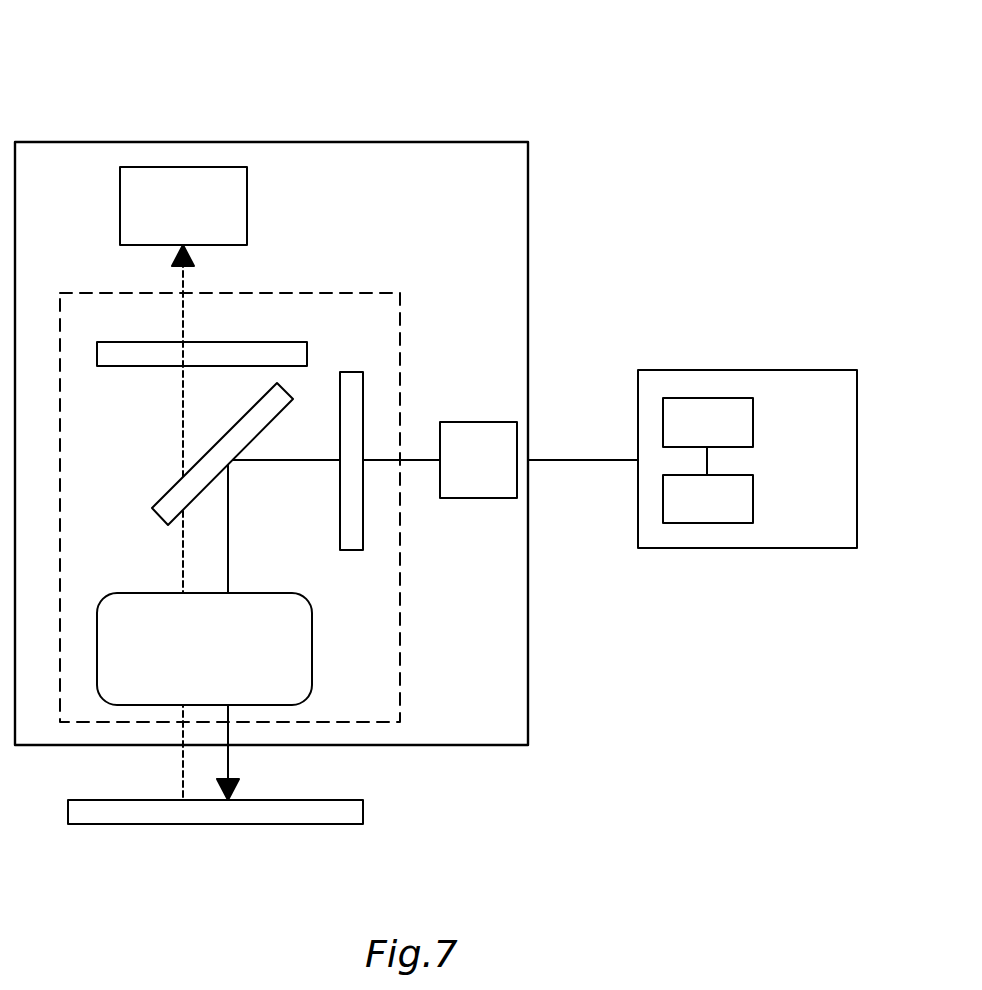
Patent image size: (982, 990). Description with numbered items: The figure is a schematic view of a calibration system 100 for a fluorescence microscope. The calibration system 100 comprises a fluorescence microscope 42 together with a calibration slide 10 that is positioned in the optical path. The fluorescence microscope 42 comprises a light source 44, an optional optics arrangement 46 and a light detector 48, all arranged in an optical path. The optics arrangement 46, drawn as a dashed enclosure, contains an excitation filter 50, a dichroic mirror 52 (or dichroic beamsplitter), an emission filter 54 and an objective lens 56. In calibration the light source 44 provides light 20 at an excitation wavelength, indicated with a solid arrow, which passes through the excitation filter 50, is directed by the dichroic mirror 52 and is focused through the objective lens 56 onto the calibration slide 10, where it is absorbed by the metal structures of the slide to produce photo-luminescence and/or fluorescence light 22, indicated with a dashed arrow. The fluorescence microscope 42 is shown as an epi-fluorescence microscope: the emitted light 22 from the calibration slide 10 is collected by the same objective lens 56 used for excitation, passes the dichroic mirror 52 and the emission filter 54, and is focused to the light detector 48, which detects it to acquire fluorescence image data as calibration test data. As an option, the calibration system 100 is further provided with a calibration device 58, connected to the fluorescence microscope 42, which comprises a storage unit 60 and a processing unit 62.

The calibration system 100 is at (714, 122).
The fluorescence microscope 42 is at (528, 217).
The light detector 48 is at (247, 210).
The optics arrangement 46 is at (400, 337).
The photo-luminescence and/or fluorescence light 22 is at (183, 555).
The light 20 is at (410, 458).
The emission filter 54 is at (118, 366).
The dichroic mirror 52 is at (182, 477).
The excitation filter 50 is at (340, 488).
The light source 44 is at (487, 498).
The objective lens 56 is at (312, 660).
The calibration device 58 is at (780, 368).
The processing unit 62 is at (753, 423).
The storage unit 60 is at (753, 498).
The calibration slide 10 is at (363, 807).